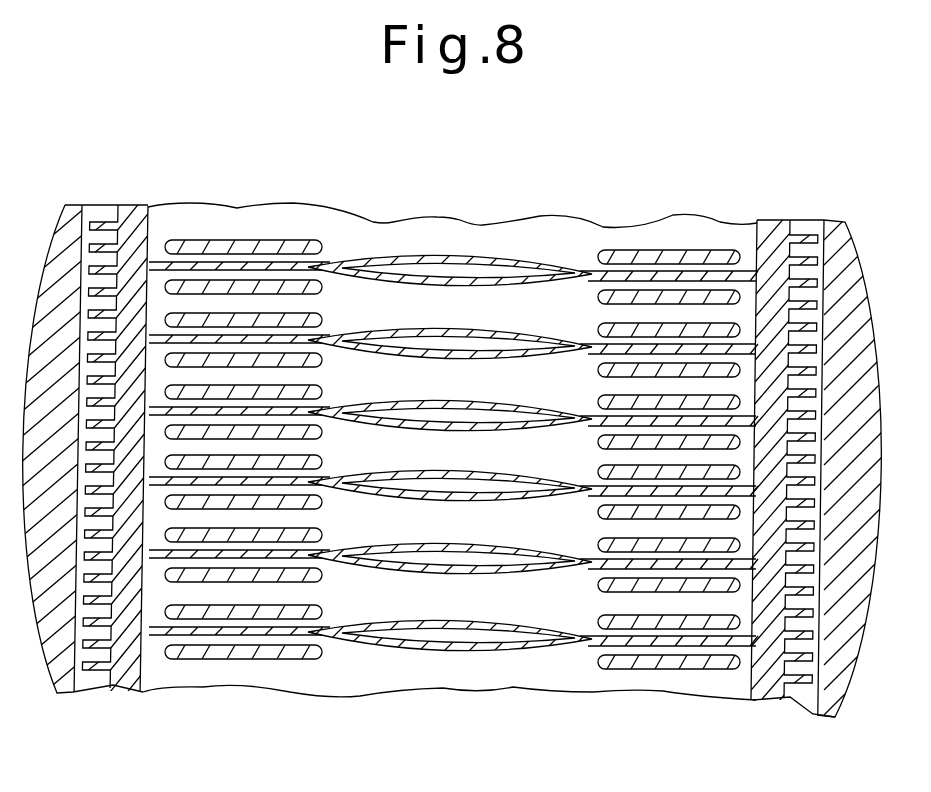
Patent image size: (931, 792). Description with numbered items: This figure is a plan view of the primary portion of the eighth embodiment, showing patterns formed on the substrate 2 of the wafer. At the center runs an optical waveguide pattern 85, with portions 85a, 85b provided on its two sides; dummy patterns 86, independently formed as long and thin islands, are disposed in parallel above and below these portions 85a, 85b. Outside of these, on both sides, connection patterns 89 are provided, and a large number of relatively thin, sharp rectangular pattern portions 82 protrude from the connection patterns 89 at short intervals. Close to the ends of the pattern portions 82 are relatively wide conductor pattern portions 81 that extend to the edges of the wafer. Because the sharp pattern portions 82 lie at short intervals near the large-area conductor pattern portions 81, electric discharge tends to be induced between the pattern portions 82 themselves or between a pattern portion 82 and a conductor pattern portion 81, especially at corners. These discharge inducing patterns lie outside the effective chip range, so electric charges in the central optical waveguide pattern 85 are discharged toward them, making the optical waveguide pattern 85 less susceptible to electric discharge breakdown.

The substrate 2 is at (415, 678).
The conductor pattern portion 81 is at (63, 688).
The rectangular pattern portion 82 is at (90, 665).
The optical waveguide pattern 85 is at (460, 467).
The portion of optical waveguide pattern 85a is at (279, 640).
The portion of optical waveguide pattern 85b is at (633, 642).
The dummy pattern 86 is at (233, 655).
The connection pattern 89 is at (132, 680).